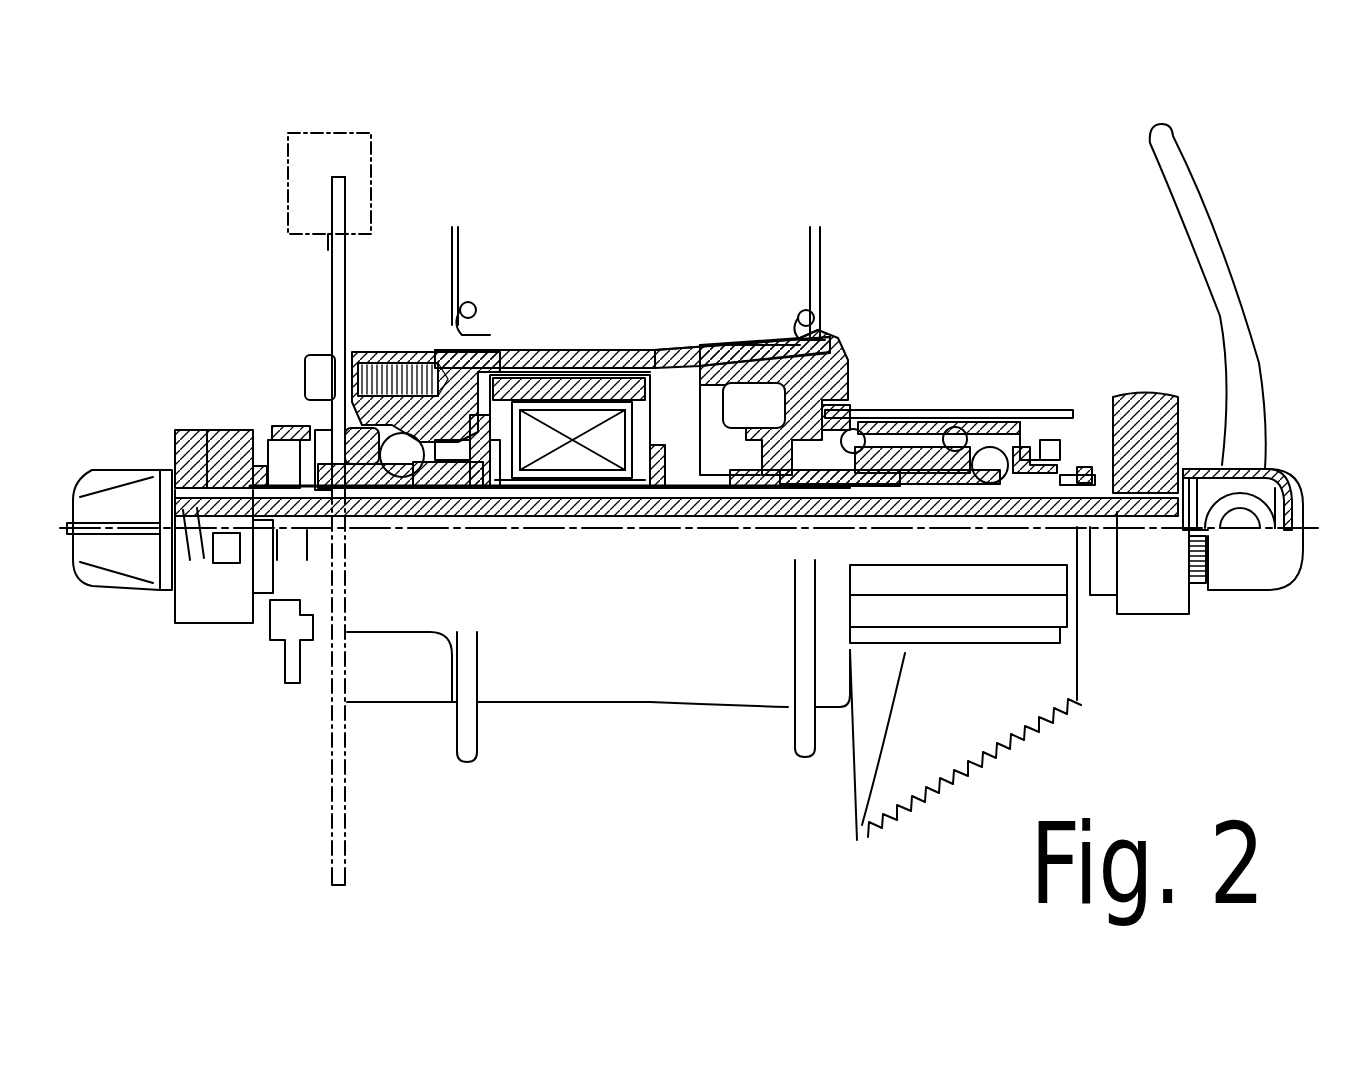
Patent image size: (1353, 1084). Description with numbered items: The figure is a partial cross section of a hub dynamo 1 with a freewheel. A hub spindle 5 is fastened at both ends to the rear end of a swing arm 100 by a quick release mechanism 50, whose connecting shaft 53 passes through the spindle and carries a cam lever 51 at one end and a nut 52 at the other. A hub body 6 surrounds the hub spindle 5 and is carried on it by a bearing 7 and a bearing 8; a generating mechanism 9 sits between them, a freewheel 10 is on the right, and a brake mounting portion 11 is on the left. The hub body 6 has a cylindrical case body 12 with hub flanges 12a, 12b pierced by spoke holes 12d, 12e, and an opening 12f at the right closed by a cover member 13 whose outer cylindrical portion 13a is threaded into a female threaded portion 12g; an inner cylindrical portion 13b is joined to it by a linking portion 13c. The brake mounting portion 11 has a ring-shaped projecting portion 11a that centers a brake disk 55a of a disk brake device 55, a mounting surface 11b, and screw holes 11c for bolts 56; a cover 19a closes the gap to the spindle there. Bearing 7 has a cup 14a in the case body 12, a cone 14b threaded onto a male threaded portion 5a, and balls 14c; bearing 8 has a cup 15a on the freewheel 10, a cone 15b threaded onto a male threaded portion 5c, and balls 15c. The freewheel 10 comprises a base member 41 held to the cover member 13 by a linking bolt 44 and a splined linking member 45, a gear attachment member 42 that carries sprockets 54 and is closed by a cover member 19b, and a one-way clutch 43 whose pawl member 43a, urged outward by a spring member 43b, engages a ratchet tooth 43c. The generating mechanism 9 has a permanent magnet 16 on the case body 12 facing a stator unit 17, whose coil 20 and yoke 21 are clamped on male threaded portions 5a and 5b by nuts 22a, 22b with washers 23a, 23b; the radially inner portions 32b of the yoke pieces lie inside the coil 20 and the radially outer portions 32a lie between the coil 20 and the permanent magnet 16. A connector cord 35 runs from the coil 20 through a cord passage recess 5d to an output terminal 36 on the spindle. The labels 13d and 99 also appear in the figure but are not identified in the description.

The hub dynamo 1 is at (632, 340).
The hub spindle 5 is at (728, 474).
The male threaded portion 5a is at (320, 470).
The male threaded portion 5b is at (700, 355).
The male threaded portion 5c is at (1078, 480).
The cord passage recess 5d is at (545, 495).
The hub body 6 is at (595, 378).
The bearing 7 is at (390, 395).
The bearing 8 is at (985, 425).
The generating mechanism 9 is at (535, 350).
The freewheel 10 is at (915, 408).
The brake mounting portion 11 is at (330, 375).
The ring-shaped projecting portion 11a is at (330, 650).
The mounting surface 11b is at (332, 690).
The screw holes 11c is at (355, 400).
The case body 12 is at (552, 378).
The hub flange 12a is at (470, 350).
The hub flange 12b is at (815, 345).
The spoke holes 12d is at (460, 318).
The spoke holes 12e is at (825, 355).
The opening 12f is at (845, 390).
The female threaded portion 12g is at (752, 345).
The cover member 13 is at (838, 380).
The outer cylindrical portion 13a is at (700, 385).
The inner cylindrical portion 13b is at (735, 500).
The linking portion 13c is at (755, 406).
The flange top 13d is at (745, 345).
The cup 14a is at (450, 405).
The cone 14b is at (408, 500).
The balls 14c is at (462, 745).
The cup 15a is at (975, 420).
The cone 15b is at (1052, 435).
The balls 15c is at (1003, 420).
The permanent magnet 16 is at (612, 400).
The stator unit 17 is at (648, 400).
The cover 19a is at (380, 470).
The cover member 19b is at (1050, 450).
The coil 20 is at (580, 410).
The yoke 21 is at (512, 490).
The nut 22a is at (505, 495).
The nut 22b is at (700, 500).
The washer 23a is at (497, 405).
The washer 23b is at (672, 400).
The radially outer portions 32a is at (655, 440).
The radially inner portions 32b is at (575, 440).
The connector cord 35 is at (450, 620).
The output terminal 36 is at (268, 440).
The base member 41 is at (905, 510).
The gear attachment member 42 is at (892, 440).
The one-way clutch 43 is at (868, 450).
The pawl member 43a is at (950, 440).
The spring member 43b is at (856, 700).
The ratchet tooth 43c is at (850, 650).
The linking bolt 44 is at (755, 500).
The linking member 45 is at (810, 560).
The quick release mechanism 50 is at (1255, 310).
The cam lever 51 is at (1228, 240).
The nut 52 is at (120, 468).
The connecting shaft 53 is at (260, 545).
The sprockets 54 is at (1090, 700).
The disk brake device 55 is at (370, 178).
The brake disk 55a is at (330, 256).
The bolts 56 is at (308, 360).
The electrical wire 99 is at (468, 240).
The swing arm 100 is at (205, 430).